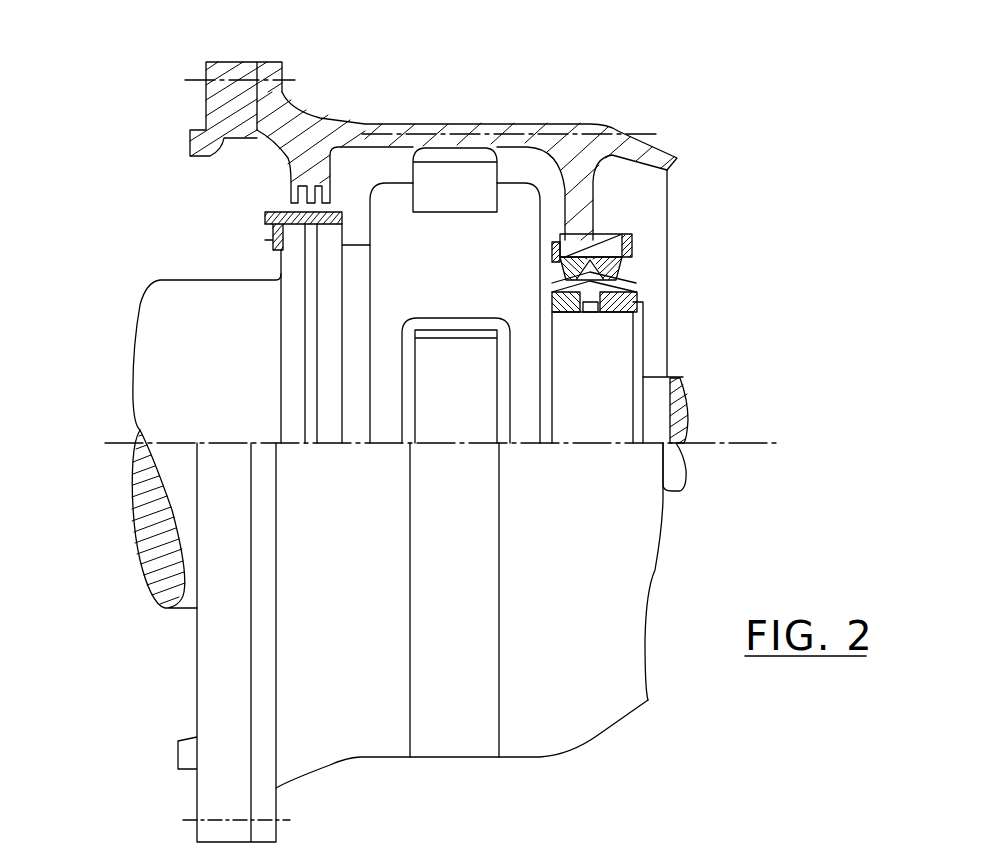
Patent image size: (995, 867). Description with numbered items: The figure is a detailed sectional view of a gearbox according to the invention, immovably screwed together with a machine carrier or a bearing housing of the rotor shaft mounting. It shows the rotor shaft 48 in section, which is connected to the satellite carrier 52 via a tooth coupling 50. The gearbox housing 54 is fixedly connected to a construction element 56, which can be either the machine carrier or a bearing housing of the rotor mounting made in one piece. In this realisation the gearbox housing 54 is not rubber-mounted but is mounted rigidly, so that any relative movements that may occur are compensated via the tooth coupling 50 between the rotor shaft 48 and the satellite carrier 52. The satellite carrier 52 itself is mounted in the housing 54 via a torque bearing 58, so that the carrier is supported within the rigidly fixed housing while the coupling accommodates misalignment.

The rotor shaft 48 is at (157, 563).
The tooth coupling 50 is at (265, 215).
The satellite carrier 52 is at (480, 283).
The gearbox housing 54 is at (312, 123).
The construction element 56 is at (216, 104).
The torque bearing 58 is at (647, 275).